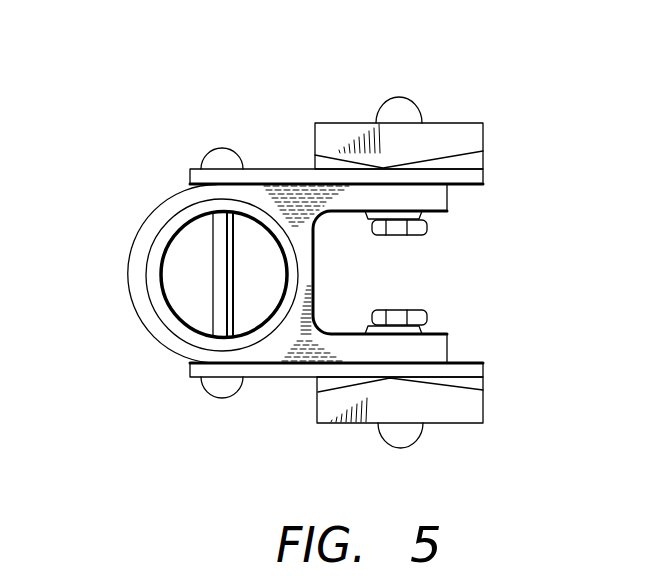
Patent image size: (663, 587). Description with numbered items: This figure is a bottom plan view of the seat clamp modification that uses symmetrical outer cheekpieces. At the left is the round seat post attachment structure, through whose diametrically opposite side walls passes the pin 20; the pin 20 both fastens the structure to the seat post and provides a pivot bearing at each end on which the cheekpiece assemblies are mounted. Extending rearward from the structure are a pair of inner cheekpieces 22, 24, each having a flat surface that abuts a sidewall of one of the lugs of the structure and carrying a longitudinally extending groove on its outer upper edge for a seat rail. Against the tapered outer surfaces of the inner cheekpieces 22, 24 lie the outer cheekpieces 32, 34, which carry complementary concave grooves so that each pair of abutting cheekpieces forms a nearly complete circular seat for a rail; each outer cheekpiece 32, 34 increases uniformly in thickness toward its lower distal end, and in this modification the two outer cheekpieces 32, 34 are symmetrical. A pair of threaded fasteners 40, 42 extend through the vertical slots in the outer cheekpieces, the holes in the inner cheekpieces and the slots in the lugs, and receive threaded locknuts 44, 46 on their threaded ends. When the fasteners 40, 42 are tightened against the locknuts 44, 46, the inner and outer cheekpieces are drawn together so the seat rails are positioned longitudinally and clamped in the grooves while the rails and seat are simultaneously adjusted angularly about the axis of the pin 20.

The pin 20 is at (212, 276).
The inner cheekpiece 22 is at (485, 168).
The inner cheekpiece 24 is at (485, 375).
The outer cheekpiece 32 is at (460, 121).
The outer cheekpiece 34 is at (465, 427).
The threaded fastener 40 is at (402, 97).
The threaded fastener 42 is at (380, 447).
The threaded locknut 44 is at (428, 226).
The threaded locknut 46 is at (428, 312).